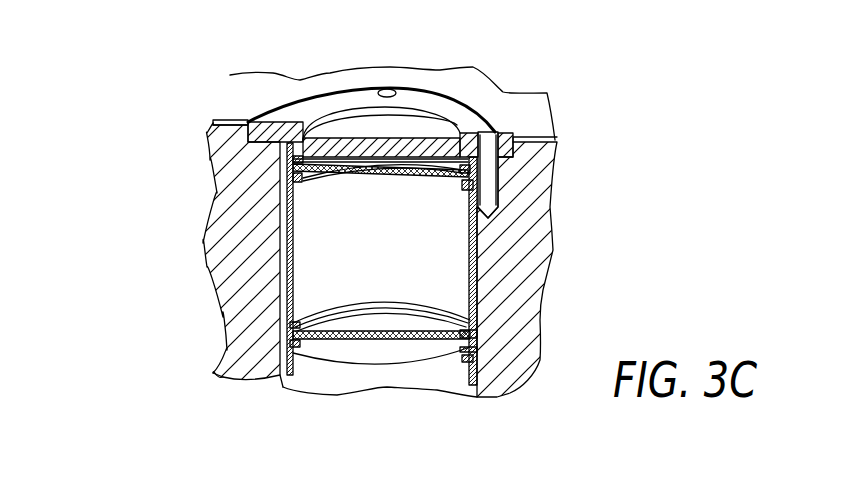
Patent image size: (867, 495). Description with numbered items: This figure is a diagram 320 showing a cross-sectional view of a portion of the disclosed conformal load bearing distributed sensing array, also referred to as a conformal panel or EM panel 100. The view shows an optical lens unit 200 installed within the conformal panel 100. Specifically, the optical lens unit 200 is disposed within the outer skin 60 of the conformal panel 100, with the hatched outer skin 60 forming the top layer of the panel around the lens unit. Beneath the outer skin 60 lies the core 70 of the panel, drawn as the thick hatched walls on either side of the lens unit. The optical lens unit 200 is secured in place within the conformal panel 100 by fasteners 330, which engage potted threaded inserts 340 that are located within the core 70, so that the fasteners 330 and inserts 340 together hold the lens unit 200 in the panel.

The conformal panel 100 is at (200, 117).
The outer skin 60 is at (473, 77).
The core 70 is at (520, 287).
The optical lens unit 200 is at (330, 262).
The diagram 320 is at (150, 205).
The fasteners 330 is at (387, 92).
The potted threaded inserts 340 is at (497, 183).